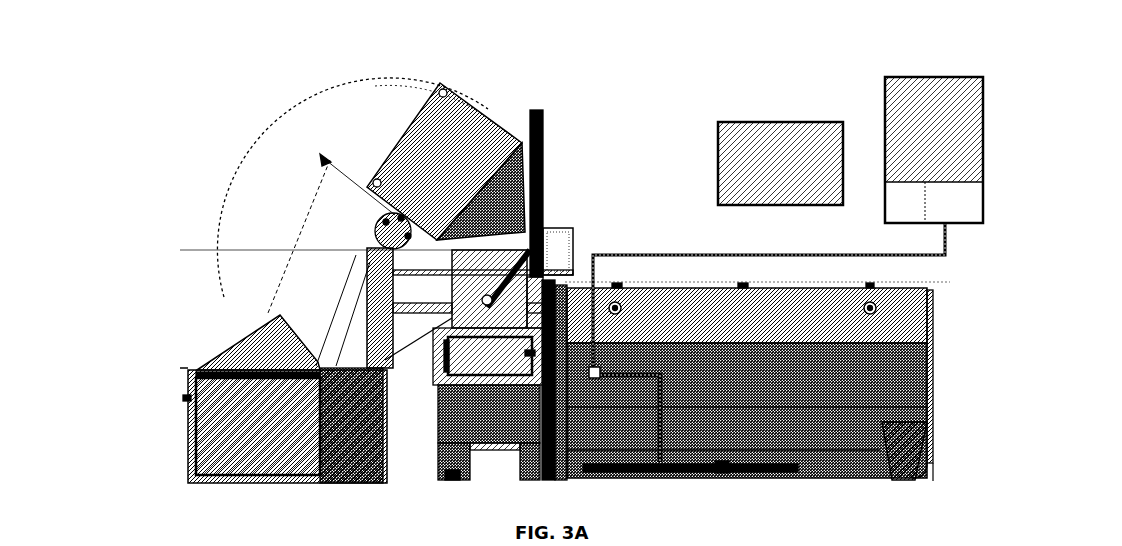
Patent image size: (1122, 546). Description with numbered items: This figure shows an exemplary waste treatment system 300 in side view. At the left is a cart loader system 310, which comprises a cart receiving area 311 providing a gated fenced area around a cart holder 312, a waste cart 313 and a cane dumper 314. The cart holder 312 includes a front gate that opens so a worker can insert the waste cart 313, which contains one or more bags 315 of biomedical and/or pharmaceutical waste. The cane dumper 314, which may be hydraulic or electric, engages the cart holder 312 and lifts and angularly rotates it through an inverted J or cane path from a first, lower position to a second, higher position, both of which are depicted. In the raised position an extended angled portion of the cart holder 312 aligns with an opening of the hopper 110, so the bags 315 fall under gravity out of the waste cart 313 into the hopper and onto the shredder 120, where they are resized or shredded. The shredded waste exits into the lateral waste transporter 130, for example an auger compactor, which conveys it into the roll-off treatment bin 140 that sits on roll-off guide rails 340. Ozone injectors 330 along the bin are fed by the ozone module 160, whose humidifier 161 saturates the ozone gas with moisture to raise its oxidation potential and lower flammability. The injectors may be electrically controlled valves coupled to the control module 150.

The waste treatment system 300 is at (1027, 69).
The cart loader system 310 is at (268, 152).
The cane dumper 314 is at (362, 248).
The cart holder 312 is at (217, 365).
The waste cart 313 is at (197, 407).
The bags 315 is at (215, 433).
The cart receiving area 311 is at (337, 453).
The lateral waste transporter 130 is at (467, 425).
The shredder 120 is at (470, 355).
The hopper 110 is at (542, 230).
The roll-off treatment bin 140 is at (921, 358).
The ozone injectors 330 is at (640, 470).
The roll-off guide rails 340 is at (773, 475).
The control module 150 is at (735, 122).
The ozone module 160 is at (885, 125).
The humidifier 161 is at (982, 187).